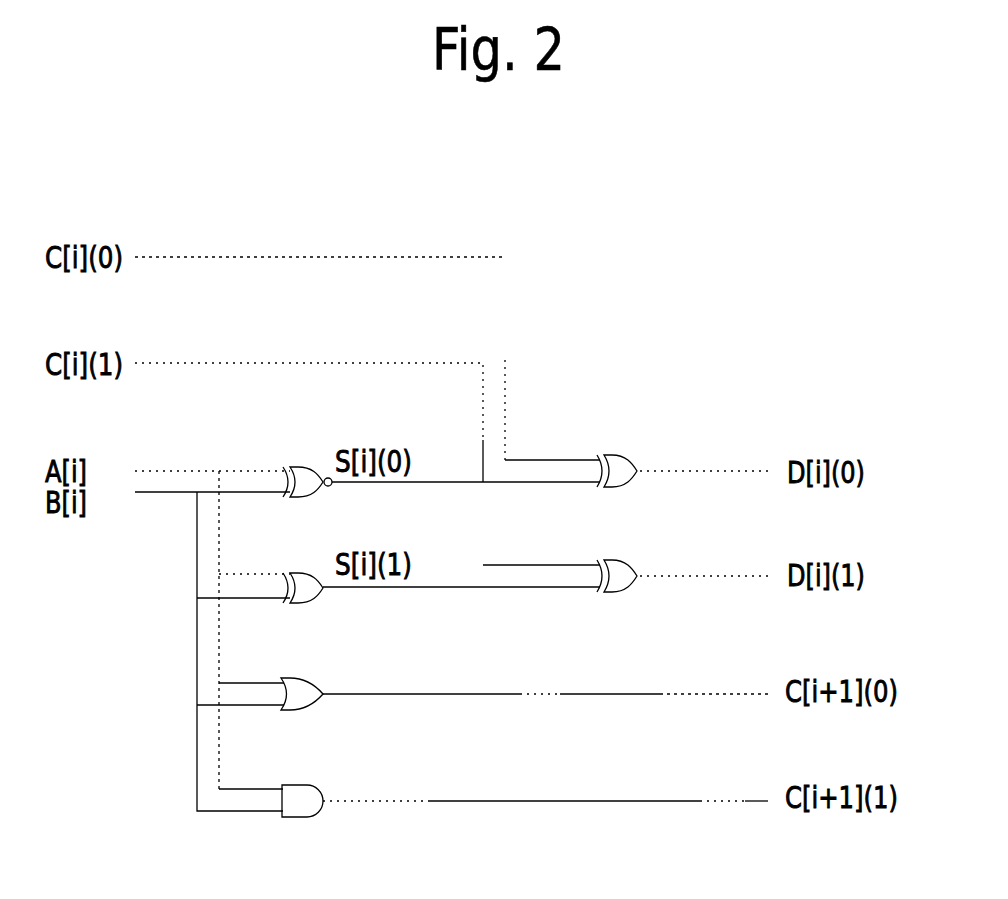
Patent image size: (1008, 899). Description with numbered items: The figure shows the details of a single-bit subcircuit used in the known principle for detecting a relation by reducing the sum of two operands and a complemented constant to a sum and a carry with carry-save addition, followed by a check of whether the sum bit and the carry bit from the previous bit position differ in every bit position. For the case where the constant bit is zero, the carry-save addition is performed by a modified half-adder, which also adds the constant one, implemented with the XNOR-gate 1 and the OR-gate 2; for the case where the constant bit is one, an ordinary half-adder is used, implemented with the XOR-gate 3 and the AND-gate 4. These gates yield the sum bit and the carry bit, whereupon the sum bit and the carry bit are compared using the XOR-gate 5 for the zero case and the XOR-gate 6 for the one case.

The XNOR-gate 1 is at (295, 503).
The OR-gate 2 is at (294, 608).
The XOR-gate 3 is at (292, 719).
The AND-gate 4 is at (291, 826).
The XOR-gate 5 is at (608, 492).
The XOR-gate 6 is at (608, 597).